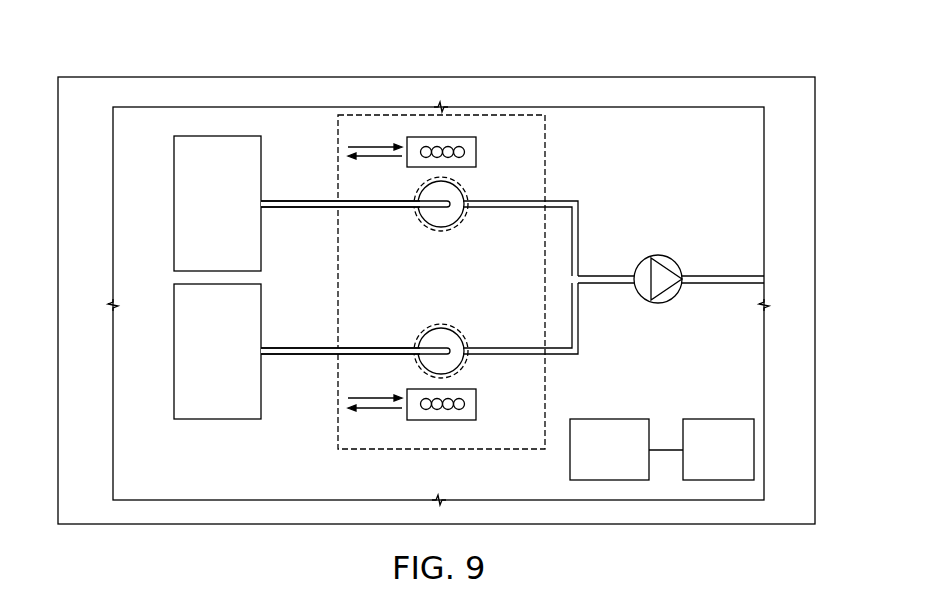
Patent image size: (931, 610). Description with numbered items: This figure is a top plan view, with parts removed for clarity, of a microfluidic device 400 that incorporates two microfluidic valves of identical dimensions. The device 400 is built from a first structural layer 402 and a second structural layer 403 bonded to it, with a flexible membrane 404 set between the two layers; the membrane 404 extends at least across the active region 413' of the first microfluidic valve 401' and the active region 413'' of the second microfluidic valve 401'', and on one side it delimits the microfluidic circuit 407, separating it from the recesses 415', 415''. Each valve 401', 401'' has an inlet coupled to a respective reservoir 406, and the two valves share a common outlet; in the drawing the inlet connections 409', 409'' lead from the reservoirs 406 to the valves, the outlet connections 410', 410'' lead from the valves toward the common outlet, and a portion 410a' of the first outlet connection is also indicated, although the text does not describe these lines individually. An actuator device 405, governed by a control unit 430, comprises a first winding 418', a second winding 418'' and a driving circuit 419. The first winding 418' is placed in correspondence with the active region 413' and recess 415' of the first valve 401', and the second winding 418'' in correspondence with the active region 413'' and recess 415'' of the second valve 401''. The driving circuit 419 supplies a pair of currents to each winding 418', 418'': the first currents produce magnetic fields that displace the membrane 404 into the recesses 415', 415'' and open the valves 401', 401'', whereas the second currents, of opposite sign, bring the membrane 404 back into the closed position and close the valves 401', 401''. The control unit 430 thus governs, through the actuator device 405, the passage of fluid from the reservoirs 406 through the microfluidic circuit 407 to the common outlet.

The microfluidic device 400 is at (733, 54).
The second structural layer 403 is at (85, 85).
The first structural layer 402 is at (148, 482).
The microfluidic circuit 407 is at (237, 310).
The reservoirs 406 is at (234, 214).
The flexible membrane 404 is at (338, 287).
The first microfluidic valve 401' is at (452, 153).
The second microfluidic valve 401'' is at (436, 383).
The active region 413' is at (412, 222).
The active region 413'' is at (422, 329).
The recess 415' is at (458, 218).
The recess 415'' is at (466, 333).
The pipe end inside first chamber 410a' is at (452, 181).
The first winding 418' is at (457, 105).
The second winding 418'' is at (431, 435).
The first inlet pipe 409' is at (340, 176).
The second inlet pipe 409'' is at (340, 378).
The first outlet pipe 410' is at (565, 238).
The second outlet pipe 410'' is at (568, 327).
The actuator device 405 is at (677, 381).
The driving circuit 419 is at (577, 470).
The control unit 430 is at (737, 470).